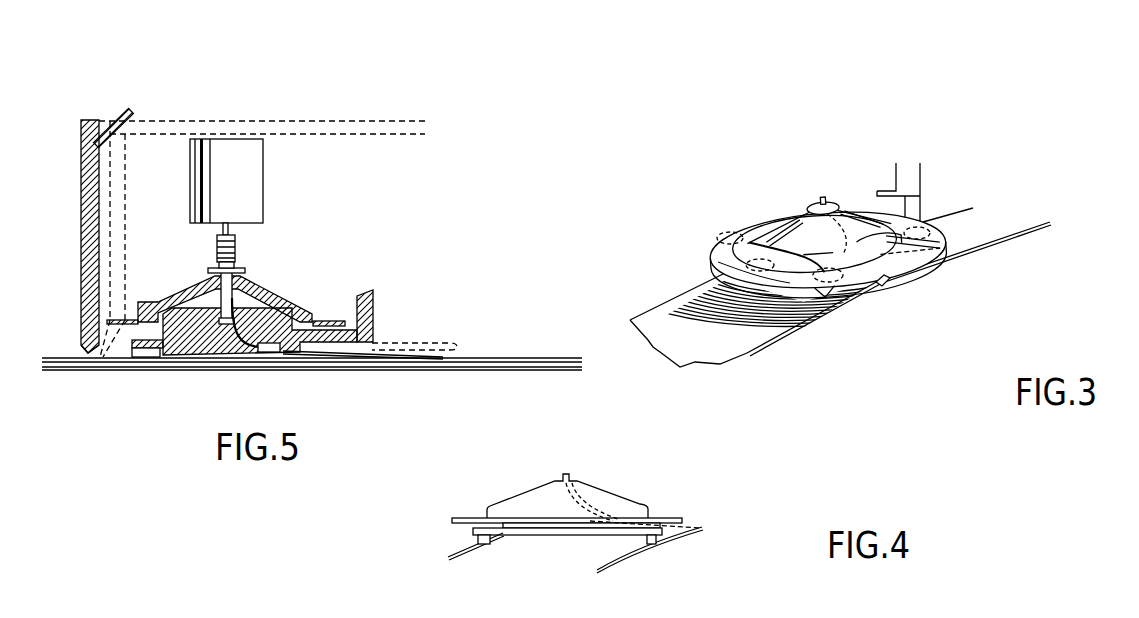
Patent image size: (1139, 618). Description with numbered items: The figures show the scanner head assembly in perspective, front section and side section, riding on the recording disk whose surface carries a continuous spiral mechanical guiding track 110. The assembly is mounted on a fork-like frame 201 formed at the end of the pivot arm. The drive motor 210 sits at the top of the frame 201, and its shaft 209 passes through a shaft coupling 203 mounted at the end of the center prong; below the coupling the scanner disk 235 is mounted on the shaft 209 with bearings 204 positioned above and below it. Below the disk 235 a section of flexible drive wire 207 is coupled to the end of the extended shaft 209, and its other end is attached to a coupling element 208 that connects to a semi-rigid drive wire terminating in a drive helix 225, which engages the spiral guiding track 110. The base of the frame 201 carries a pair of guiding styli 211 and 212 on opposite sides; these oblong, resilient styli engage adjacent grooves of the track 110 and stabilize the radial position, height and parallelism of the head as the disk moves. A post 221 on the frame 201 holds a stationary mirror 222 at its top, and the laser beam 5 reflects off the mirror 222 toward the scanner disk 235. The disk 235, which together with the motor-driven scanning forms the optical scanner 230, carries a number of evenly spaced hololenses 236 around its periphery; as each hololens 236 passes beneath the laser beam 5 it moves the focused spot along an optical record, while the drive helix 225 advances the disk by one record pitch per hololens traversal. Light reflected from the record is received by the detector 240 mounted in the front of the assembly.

In FIG. 5, the laser beam 5 is at (352, 127).
In FIG. 3, the mechanical guiding track 110 is at (827, 274).
In FIG. 5, the fork-like frame 201 is at (374, 298).
In FIG. 5, the shaft coupling 203 is at (236, 250).
In FIG. 5, the bearings 204 is at (245, 272).
In FIG. 5, the flexible drive wire 207 is at (231, 358).
In FIG. 5, the coupling element 208 is at (268, 353).
In FIG. 5, the shaft 209 is at (232, 228).
In FIG. 5, the drive motor 210 is at (245, 182).
In FIG. 5, the guiding stylus 211 is at (147, 350).
In FIG. 3, the guiding stylus 211 is at (885, 284).
In FIG. 4, the guiding stylus 211 is at (655, 545).
In FIG. 4, the guiding stylus 212 is at (483, 545).
In FIG. 5, the post 221 is at (81, 234).
In FIG. 5, the stationary mirror 222 is at (128, 110).
In FIG. 5, the drive helix 225 is at (405, 358).
In FIG. 3, the drive helix 225 is at (965, 248).
In FIG. 4, the drive helix 225 is at (682, 530).
In FIG. 3, the optical scanner 230 is at (801, 201).
In FIG. 4, the optical scanner 230 is at (519, 493).
In FIG. 5, the scanner disk 235 is at (302, 300).
In FIG. 3, the scanner disk 235 is at (718, 262).
In FIG. 3, the hololenses 236 is at (758, 226).
In FIG. 5, the detector 240 is at (82, 352).